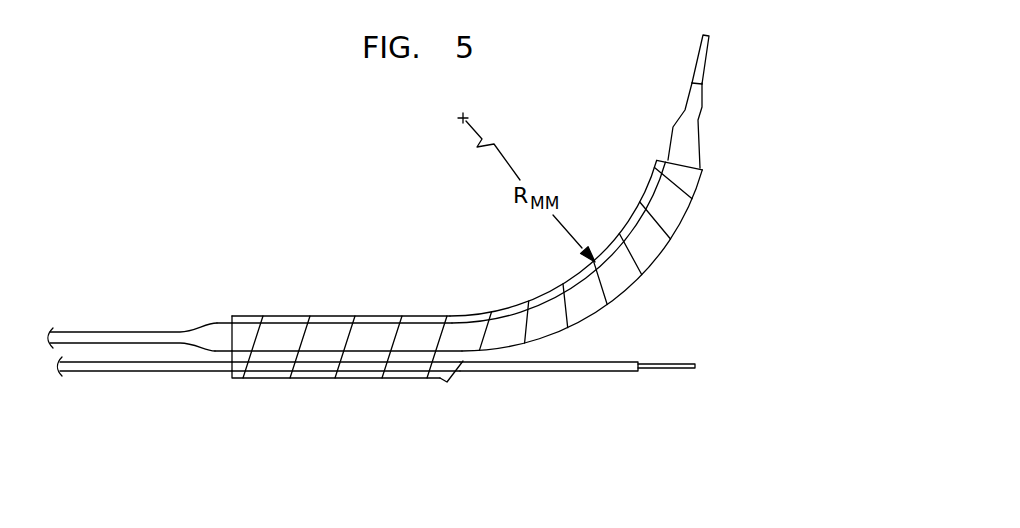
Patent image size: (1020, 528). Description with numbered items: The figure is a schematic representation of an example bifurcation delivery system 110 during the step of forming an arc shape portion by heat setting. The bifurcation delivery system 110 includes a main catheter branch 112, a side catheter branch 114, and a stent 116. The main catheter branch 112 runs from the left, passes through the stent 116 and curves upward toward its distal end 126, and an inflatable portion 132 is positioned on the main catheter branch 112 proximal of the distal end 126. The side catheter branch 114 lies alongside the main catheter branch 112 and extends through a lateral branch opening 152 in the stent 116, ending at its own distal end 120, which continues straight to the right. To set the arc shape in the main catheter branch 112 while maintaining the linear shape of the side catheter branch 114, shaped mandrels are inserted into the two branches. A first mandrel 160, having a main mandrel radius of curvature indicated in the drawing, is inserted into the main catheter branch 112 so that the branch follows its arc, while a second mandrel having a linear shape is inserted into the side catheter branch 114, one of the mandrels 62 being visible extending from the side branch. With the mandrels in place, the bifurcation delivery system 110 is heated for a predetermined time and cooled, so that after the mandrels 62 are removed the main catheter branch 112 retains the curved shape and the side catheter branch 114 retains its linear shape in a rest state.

The mandrel 62 is at (677, 370).
The bifurcation delivery system 110 is at (275, 384).
The main catheter branch 112 is at (146, 328).
The side catheter branch 114 is at (155, 376).
The stent 116 is at (708, 206).
The distal end 120 is at (613, 362).
The distal end 126 is at (704, 90).
The inflatable portion 132 is at (217, 330).
The lateral branch opening 152 is at (449, 382).
The first mandrel 160 is at (709, 53).